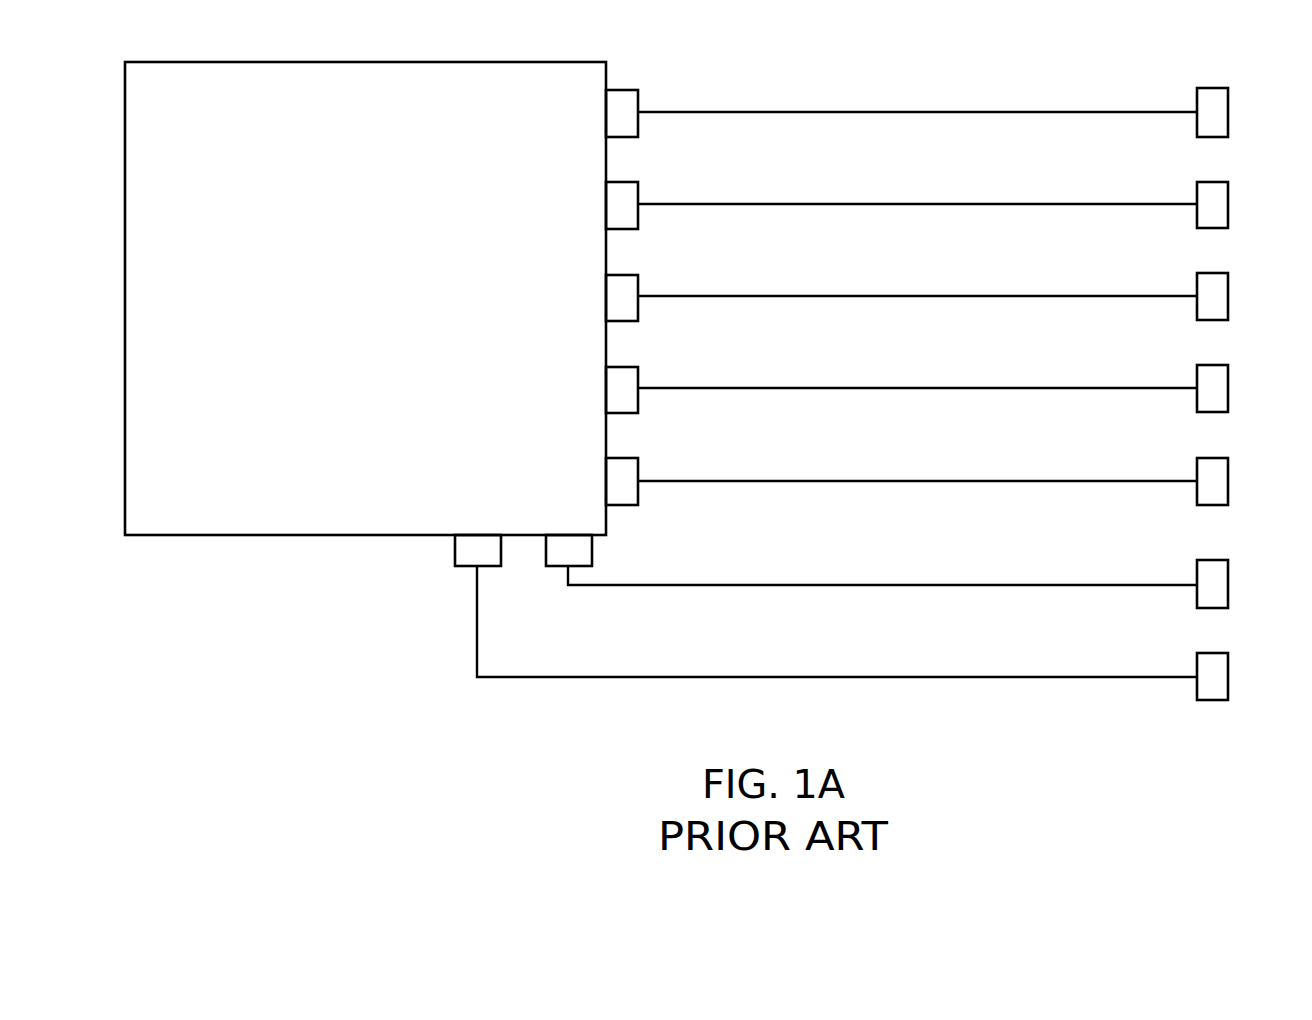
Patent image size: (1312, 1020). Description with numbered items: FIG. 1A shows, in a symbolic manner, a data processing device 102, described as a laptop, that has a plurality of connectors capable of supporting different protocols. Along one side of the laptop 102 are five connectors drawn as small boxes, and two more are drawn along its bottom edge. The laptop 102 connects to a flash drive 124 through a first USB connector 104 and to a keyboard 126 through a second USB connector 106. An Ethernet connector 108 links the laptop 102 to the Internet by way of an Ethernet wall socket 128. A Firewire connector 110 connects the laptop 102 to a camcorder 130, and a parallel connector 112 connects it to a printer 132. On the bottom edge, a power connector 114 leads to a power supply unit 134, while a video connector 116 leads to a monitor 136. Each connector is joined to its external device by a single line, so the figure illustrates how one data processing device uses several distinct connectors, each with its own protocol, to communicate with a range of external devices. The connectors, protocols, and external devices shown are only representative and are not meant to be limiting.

The data processing device 102 is at (365, 298).
The USB connector 104 is at (622, 103).
The USB connector 106 is at (622, 195).
The Ethernet connector 108 is at (622, 287).
The Firewire connector 110 is at (622, 379).
The parallel connector 112 is at (622, 472).
The power connector 114 is at (580, 550).
The video connector 116 is at (473, 551).
The flash drive 124 is at (1208, 102).
The keyboard 126 is at (1208, 196).
The Ethernet wall socket 128 is at (1208, 287).
The camcorder 130 is at (1208, 379).
The printer 132 is at (1208, 472).
The power supply unit 134 is at (1208, 574).
The monitor 136 is at (1208, 667).